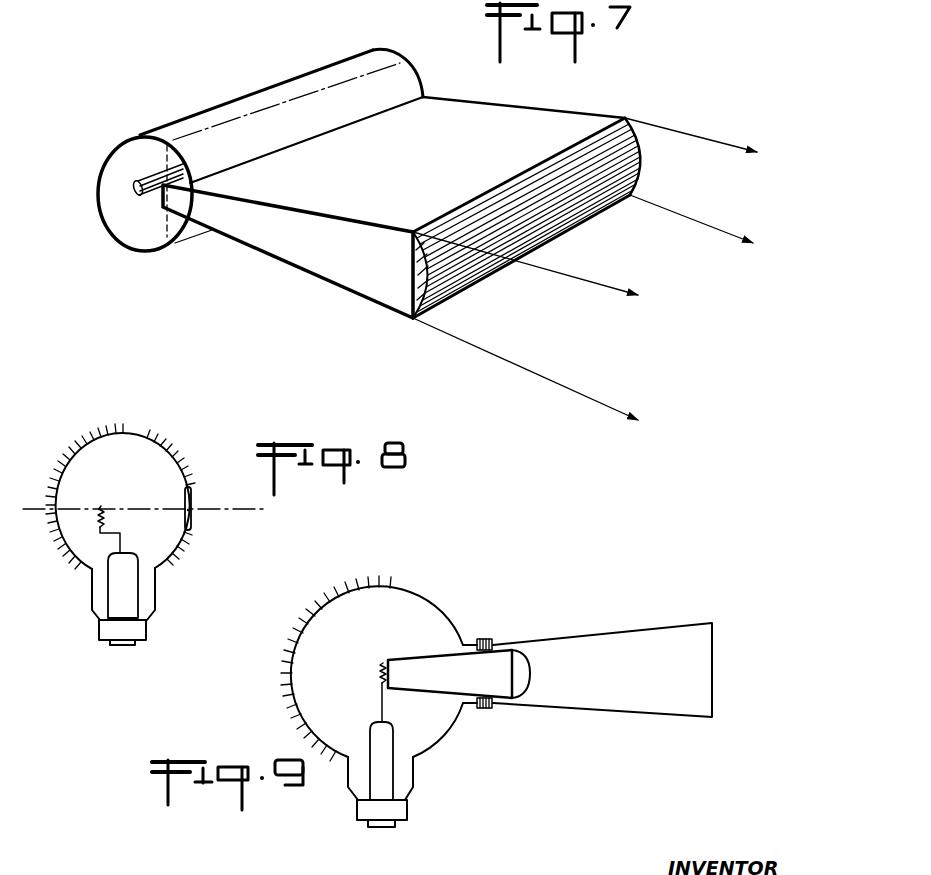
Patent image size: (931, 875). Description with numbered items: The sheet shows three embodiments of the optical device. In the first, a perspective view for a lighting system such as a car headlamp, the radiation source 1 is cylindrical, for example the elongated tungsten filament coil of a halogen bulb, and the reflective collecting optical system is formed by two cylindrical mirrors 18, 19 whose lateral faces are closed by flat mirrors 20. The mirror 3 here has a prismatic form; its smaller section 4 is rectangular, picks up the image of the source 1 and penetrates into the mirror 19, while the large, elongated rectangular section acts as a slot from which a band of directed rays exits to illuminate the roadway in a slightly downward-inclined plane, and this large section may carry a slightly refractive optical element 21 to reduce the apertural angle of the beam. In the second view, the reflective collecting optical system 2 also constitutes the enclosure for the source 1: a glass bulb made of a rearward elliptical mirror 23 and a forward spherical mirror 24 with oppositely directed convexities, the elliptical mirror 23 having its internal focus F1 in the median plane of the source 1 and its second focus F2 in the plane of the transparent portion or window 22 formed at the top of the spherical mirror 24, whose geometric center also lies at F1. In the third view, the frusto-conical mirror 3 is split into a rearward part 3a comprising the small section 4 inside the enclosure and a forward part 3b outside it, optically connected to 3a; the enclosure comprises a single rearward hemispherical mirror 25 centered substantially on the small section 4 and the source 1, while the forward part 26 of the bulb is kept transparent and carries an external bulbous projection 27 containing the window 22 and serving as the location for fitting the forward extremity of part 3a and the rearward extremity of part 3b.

In FIG. 7, the radiation source 1 is at (152, 175).
In FIG. 8, the radiation source 1 is at (105, 521).
In FIG. 9, the radiation source 1 is at (378, 677).
In FIG. 8, the reflective collecting optical system 2 is at (152, 427).
In FIG. 9, the reflective collecting optical system 2 is at (346, 586).
In FIG. 7, the frusto-conical mirror 3 is at (512, 118).
In FIG. 9, the frusto-conical mirror 3 is at (545, 674).
In FIG. 9, the rearward part of the frusto-conical mirror 3a is at (445, 642).
In FIG. 9, the forward part of the frusto-conical mirror 3b is at (617, 712).
In FIG. 7, the small section 4 is at (152, 198).
In FIG. 9, the small section 4 is at (405, 657).
In FIG. 7, the cylindrical mirror 18 is at (112, 148).
In FIG. 7, the cylindrical mirror 19 is at (178, 235).
In FIG. 7, the flat mirror 20 is at (120, 215).
In FIG. 7, the slightly refractive optical element 21 is at (425, 288).
In FIG. 8, the transparent portion 22 is at (191, 498).
In FIG. 9, the transparent portion 22 is at (531, 672).
In FIG. 8, the elliptical mirror 23 is at (55, 493).
In FIG. 8, the spherical mirror 24 is at (178, 458).
In FIG. 9, the rearward hemispherical mirror 25 is at (305, 623).
In FIG. 9, the forward part of the bulb 26 is at (422, 595).
In FIG. 9, the external bulbous projection 27 is at (500, 645).
In FIG. 8, the internal focus F1 is at (98, 508).
In FIG. 8, the second focus F2 is at (188, 510).